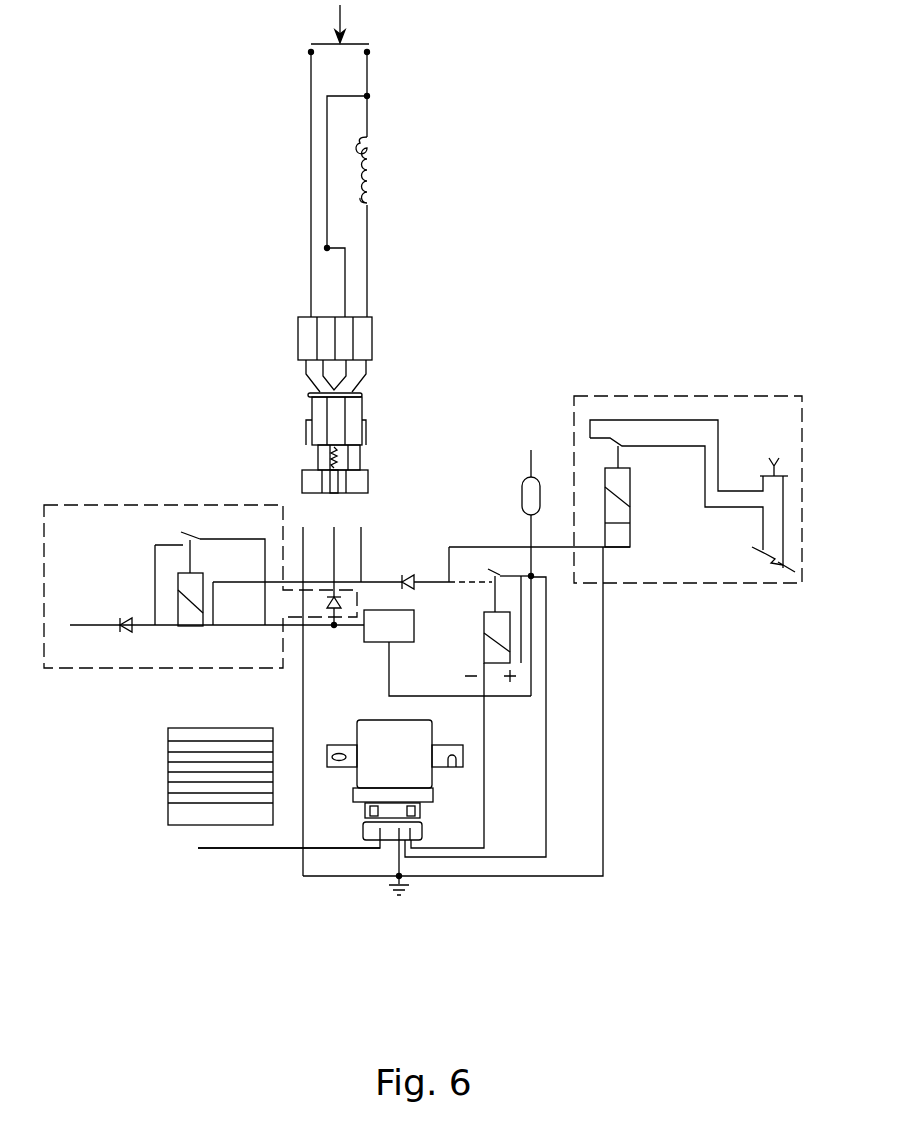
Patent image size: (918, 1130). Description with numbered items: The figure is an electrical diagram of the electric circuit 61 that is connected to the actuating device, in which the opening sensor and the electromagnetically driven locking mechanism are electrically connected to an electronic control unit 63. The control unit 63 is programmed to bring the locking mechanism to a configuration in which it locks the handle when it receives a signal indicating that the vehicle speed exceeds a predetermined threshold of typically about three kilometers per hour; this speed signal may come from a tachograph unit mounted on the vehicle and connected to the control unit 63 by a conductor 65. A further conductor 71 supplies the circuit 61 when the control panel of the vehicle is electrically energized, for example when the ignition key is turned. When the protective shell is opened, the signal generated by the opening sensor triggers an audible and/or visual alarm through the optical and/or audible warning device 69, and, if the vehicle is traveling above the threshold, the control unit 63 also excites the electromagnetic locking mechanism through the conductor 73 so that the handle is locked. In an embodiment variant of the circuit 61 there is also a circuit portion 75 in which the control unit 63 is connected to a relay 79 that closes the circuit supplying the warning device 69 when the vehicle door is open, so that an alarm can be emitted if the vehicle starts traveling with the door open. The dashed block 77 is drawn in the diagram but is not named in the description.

The electric circuit 61 is at (646, 931).
The electronic control unit 63 is at (410, 770).
The conductor 65 is at (225, 850).
The warning device 69 is at (303, 680).
The conductor 71 is at (530, 462).
The conductor 73 is at (365, 547).
The circuit portion 75 is at (98, 549).
The ignition unit 77 is at (688, 489).
The relay 79 is at (196, 524).